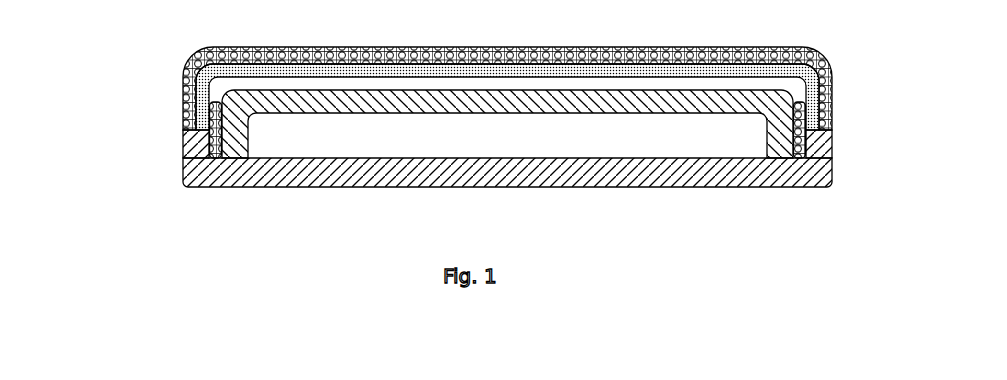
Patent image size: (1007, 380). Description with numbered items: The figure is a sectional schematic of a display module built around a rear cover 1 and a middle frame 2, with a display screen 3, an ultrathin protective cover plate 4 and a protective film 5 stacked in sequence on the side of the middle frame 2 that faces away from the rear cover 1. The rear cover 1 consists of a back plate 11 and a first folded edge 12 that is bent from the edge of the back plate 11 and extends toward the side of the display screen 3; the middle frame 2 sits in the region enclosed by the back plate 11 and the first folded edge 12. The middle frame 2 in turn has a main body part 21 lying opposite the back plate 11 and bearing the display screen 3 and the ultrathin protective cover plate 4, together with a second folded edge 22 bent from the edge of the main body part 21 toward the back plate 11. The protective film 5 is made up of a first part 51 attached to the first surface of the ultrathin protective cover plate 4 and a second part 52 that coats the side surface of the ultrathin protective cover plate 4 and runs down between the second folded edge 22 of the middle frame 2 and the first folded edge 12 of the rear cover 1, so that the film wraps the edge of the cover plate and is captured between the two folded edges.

The rear cover 1 is at (437, 145).
The back plate 11 is at (183, 175).
The first folded edge 12 is at (183, 147).
The middle frame 2 is at (862, 131).
The main body part 21 is at (812, 118).
The second folded edge 22 is at (793, 146).
The display screen 3 is at (794, 99).
The ultrathin protective cover plate 4 is at (796, 64).
The protective film 5 is at (448, 90).
The first part 51 is at (196, 67).
The second part 52 is at (148, 136).